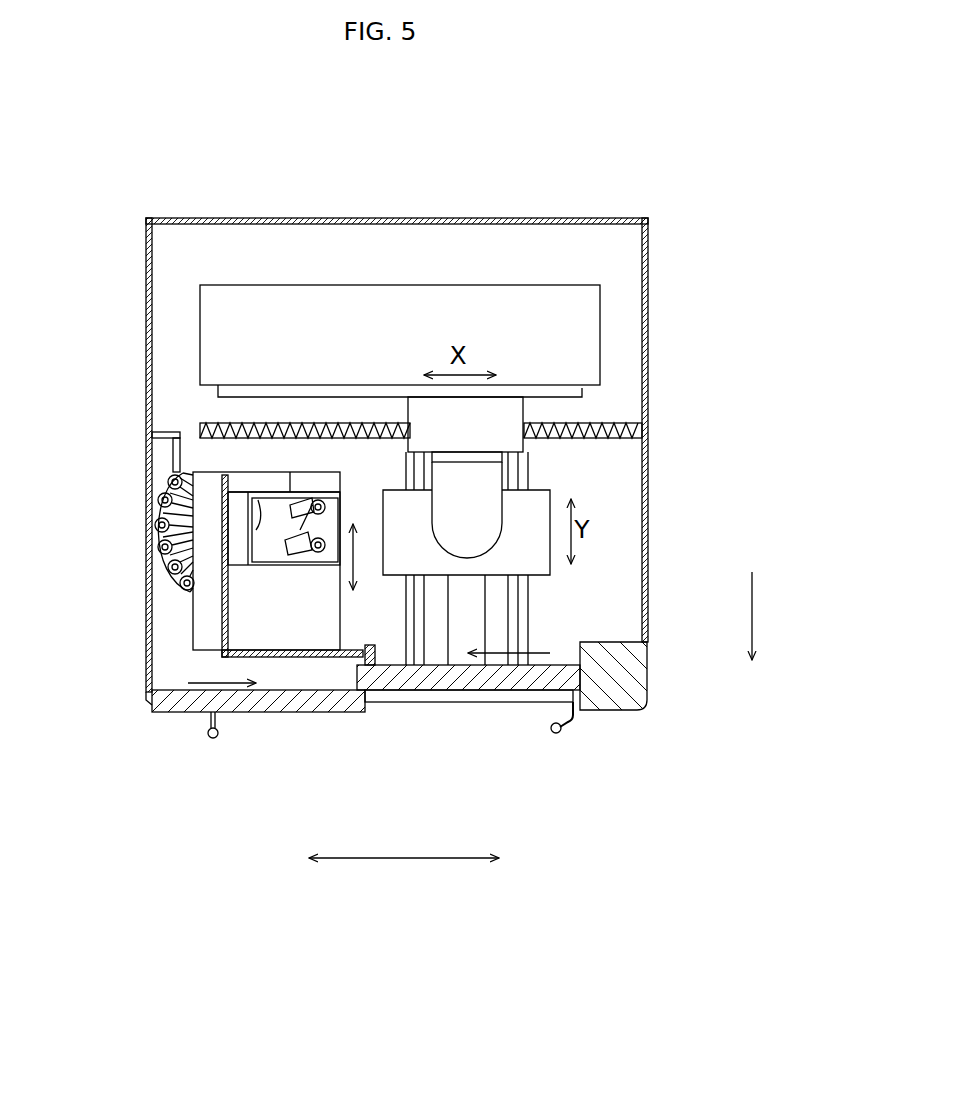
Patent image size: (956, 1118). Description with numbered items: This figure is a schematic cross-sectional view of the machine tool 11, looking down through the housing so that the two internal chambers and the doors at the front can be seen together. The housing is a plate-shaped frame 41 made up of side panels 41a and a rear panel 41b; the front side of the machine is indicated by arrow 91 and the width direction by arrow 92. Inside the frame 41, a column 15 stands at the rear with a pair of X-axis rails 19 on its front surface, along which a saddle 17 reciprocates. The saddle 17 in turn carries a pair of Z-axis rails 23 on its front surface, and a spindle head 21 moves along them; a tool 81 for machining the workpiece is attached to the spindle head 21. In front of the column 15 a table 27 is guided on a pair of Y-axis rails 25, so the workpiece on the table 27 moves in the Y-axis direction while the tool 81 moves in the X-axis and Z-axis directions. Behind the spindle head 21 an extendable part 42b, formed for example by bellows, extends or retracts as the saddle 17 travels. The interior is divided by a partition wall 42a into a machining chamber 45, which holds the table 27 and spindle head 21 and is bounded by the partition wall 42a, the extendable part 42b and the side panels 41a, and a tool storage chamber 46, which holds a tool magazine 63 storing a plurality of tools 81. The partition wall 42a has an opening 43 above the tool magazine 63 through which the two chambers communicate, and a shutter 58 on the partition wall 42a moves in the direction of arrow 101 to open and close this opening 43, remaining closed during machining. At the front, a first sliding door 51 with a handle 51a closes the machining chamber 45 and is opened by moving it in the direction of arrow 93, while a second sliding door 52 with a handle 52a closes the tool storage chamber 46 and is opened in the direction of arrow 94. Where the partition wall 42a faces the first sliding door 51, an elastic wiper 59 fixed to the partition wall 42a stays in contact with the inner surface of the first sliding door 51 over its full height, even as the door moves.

The machine tool 11 is at (580, 163).
The column 15 is at (590, 312).
The saddle 17 is at (497, 408).
The X-axis rails 19 is at (580, 395).
The spindle head 21 is at (490, 484).
The Z-axis rails 23 is at (490, 459).
The Y-axis rails 25 is at (517, 610).
The table 27 is at (530, 562).
The frame 41 is at (240, 218).
The side panels 41a is at (146, 252).
The rear panel 41b is at (418, 218).
The partition wall 42a is at (168, 438).
The extendable part 42b is at (210, 425).
The opening 43 is at (258, 515).
The machining chamber 45 is at (622, 530).
The tool storage chamber 46 is at (168, 670).
The first sliding door 51 is at (457, 675).
The handle 51a is at (556, 735).
The second sliding door 52 is at (300, 700).
The handle 52a is at (213, 740).
The shutter 58 is at (247, 618).
The wiper 59 is at (372, 665).
The tool magazine 63 is at (183, 503).
The tool 81 is at (163, 525).
The arrow (front side direction) 91 is at (755, 612).
The arrow (width direction) 92 is at (428, 870).
The arrow (first door opening direction) 93 is at (500, 656).
The arrow (second door opening direction) 94 is at (197, 688).
The arrow (shutter movement direction) 101 is at (367, 553).